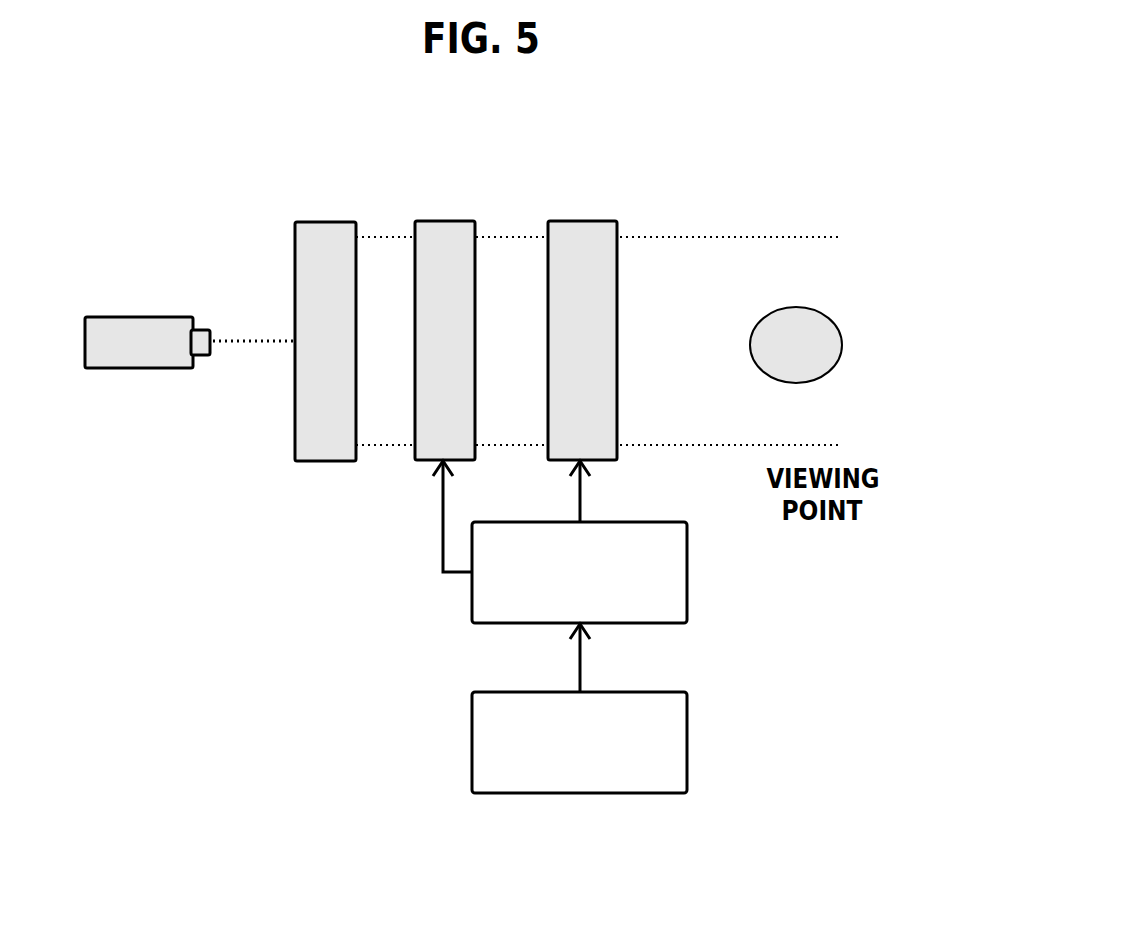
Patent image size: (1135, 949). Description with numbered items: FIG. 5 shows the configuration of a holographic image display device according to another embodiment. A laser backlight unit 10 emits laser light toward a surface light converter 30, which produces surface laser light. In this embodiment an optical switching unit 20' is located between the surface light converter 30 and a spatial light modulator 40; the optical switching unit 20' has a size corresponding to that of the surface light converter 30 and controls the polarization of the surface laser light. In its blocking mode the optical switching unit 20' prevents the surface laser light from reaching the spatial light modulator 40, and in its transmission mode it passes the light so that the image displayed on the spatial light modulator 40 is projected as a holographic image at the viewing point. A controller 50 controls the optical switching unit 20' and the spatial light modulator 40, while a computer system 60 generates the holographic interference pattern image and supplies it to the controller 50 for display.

The laser backlight unit 10 is at (148, 317).
The optical switching unit 20' is at (459, 307).
The surface light converter 30 is at (327, 222).
The spatial light modulator (SLM) 40 is at (585, 221).
The controller 50 is at (625, 522).
The computer system 60 is at (675, 692).